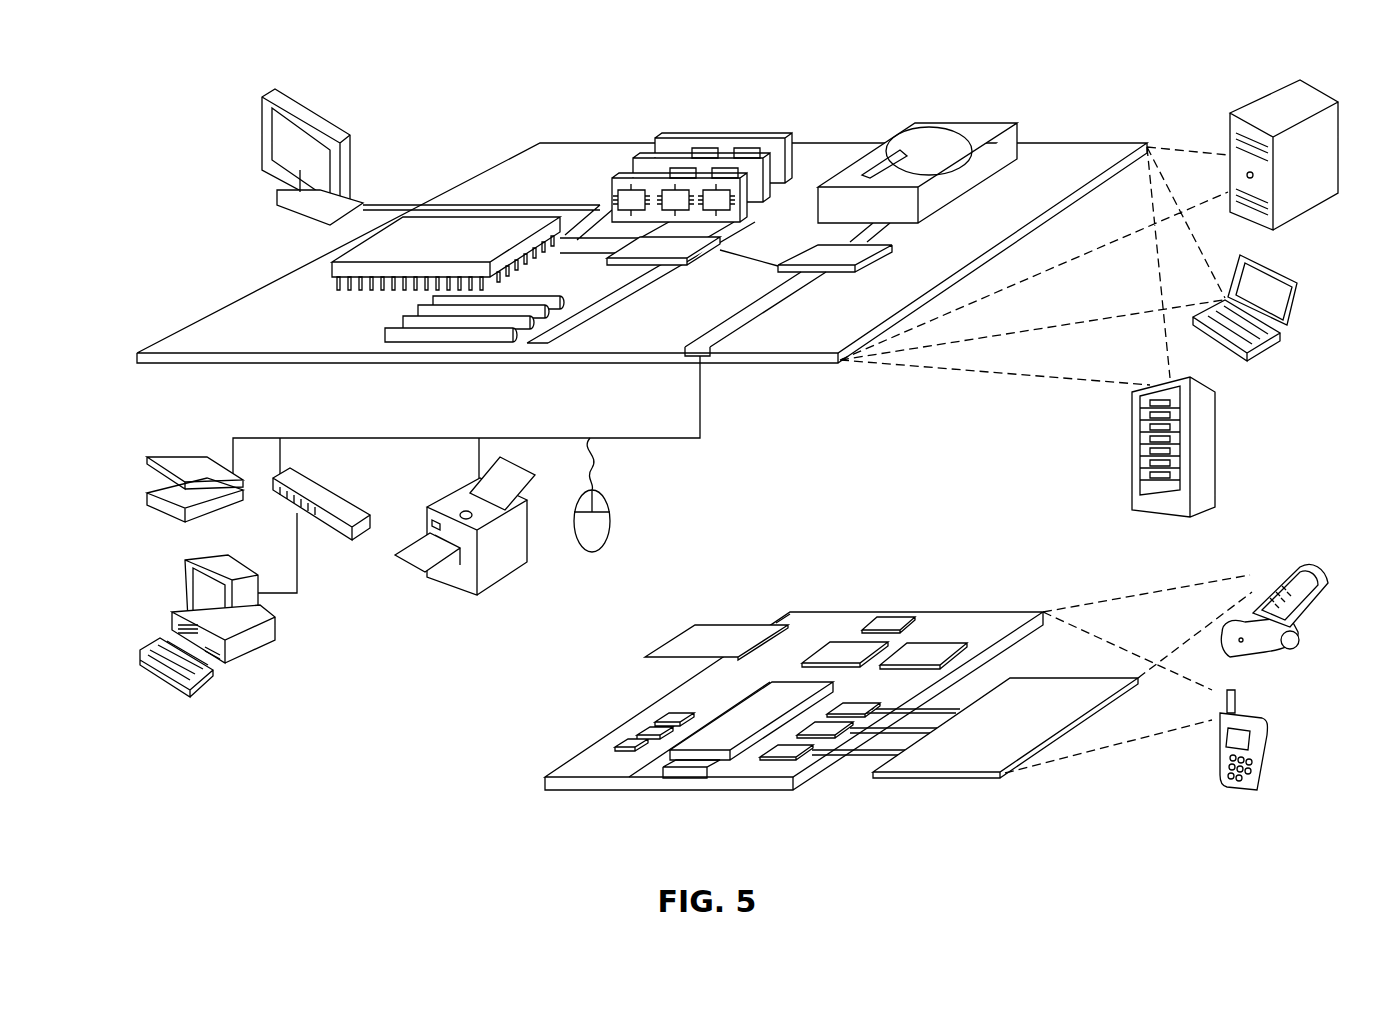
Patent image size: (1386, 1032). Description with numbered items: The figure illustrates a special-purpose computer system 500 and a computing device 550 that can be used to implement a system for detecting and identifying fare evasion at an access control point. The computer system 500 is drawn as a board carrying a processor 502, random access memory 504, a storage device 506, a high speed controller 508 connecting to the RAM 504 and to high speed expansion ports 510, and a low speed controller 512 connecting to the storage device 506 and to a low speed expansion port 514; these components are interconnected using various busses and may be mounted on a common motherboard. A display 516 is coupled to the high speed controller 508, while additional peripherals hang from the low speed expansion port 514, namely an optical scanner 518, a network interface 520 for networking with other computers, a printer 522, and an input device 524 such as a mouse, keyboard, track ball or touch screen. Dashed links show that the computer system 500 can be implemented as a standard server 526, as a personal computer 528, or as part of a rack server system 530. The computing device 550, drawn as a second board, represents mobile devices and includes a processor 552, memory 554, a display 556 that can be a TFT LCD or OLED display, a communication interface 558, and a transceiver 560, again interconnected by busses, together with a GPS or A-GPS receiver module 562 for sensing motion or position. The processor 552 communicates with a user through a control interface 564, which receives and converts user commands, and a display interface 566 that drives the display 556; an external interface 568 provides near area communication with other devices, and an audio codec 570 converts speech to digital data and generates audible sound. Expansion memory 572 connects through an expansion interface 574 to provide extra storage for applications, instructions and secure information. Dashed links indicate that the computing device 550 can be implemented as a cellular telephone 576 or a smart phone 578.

The special-purpose computer system 500 is at (484, 118).
The processor 502 is at (446, 253).
The random access memory (RAM) 504 is at (745, 135).
The storage device 506 is at (917, 173).
The high speed controller 508 is at (663, 251).
The high speed expansion ports 510 is at (398, 318).
The low speed controller 512 is at (835, 258).
The low speed expansion port 514 is at (740, 340).
The display 516 is at (325, 112).
The optical scanner 518 is at (182, 455).
The network interface 520 is at (352, 498).
The printer 522 is at (480, 598).
The input device 524 is at (612, 520).
The standard server 526 is at (1330, 95).
The personal computer 528 is at (1288, 335).
The rack server system 530 is at (1218, 460).
The computing device 550 is at (505, 820).
The processor 552 is at (728, 762).
The memory 554 is at (626, 742).
The display 556 is at (1005, 728).
The communication interface 558 is at (840, 640).
The transceiver 560 is at (930, 637).
The GPS or A-GPS receiver module 562 is at (893, 613).
The control interface 564 is at (822, 740).
The display interface 566 is at (782, 762).
The external interface 568 is at (667, 795).
The audio codec 570 is at (868, 720).
The expansion memory 572 is at (705, 625).
The expansion interface 574 is at (780, 622).
The cellular telephone 576 is at (1296, 650).
The smart phone 578 is at (1268, 790).